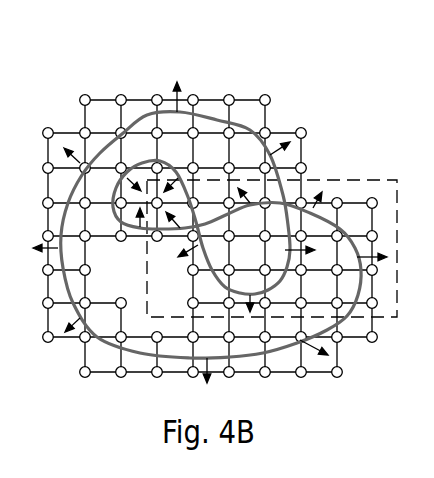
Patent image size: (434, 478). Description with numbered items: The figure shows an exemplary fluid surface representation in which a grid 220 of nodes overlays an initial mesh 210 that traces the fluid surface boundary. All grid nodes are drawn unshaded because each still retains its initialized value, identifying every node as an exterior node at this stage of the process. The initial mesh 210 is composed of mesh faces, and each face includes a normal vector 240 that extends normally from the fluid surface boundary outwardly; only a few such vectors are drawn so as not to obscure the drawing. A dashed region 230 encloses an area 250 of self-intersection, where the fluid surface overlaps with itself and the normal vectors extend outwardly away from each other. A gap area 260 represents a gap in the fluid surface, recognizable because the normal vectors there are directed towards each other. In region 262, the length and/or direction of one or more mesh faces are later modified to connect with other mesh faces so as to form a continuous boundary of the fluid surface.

The initial mesh 210 is at (210, 118).
The grid 220 is at (135, 97).
The region 230 is at (355, 177).
The normal vector 240 is at (64, 145).
The area of self-intersection 250 is at (232, 248).
The gap area 260 is at (133, 210).
The region 262 is at (292, 190).